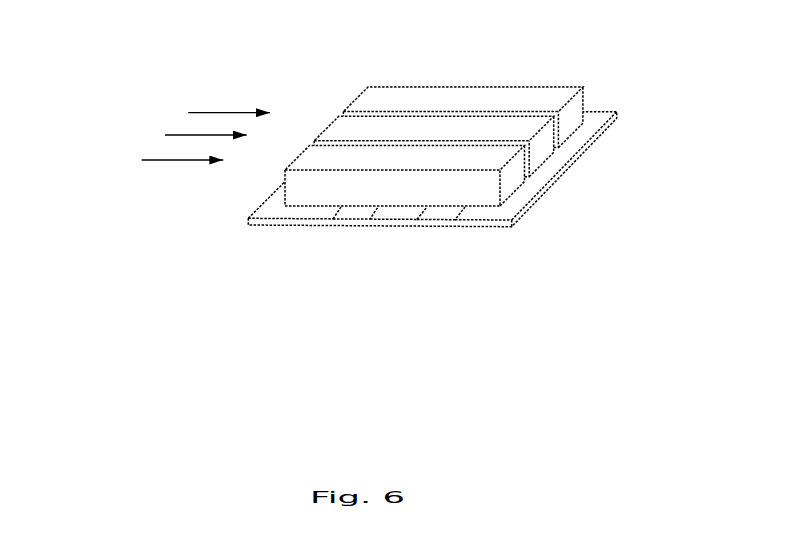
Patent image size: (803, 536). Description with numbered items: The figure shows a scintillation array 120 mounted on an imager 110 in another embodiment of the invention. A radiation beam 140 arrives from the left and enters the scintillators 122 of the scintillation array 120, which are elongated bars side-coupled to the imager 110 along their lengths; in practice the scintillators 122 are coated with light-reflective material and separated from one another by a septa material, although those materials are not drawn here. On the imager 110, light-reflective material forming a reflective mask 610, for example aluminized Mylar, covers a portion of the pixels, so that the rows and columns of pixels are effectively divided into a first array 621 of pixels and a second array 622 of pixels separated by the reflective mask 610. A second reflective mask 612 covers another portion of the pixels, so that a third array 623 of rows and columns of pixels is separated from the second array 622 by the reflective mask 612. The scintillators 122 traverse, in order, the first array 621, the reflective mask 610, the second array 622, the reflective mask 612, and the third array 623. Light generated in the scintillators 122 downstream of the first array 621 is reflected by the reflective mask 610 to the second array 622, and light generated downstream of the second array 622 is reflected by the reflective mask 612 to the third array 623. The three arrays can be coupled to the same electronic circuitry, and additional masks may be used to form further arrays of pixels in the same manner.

The imager 110 is at (413, 261).
The scintillation array 120 is at (470, 114).
The scintillators 122 is at (332, 98).
The radiation beam 140 is at (99, 127).
The reflective mask 610 is at (355, 215).
The second reflective mask 612 is at (439, 217).
The first array 621 is at (268, 205).
The second array 622 is at (395, 217).
The third array 623 is at (503, 215).